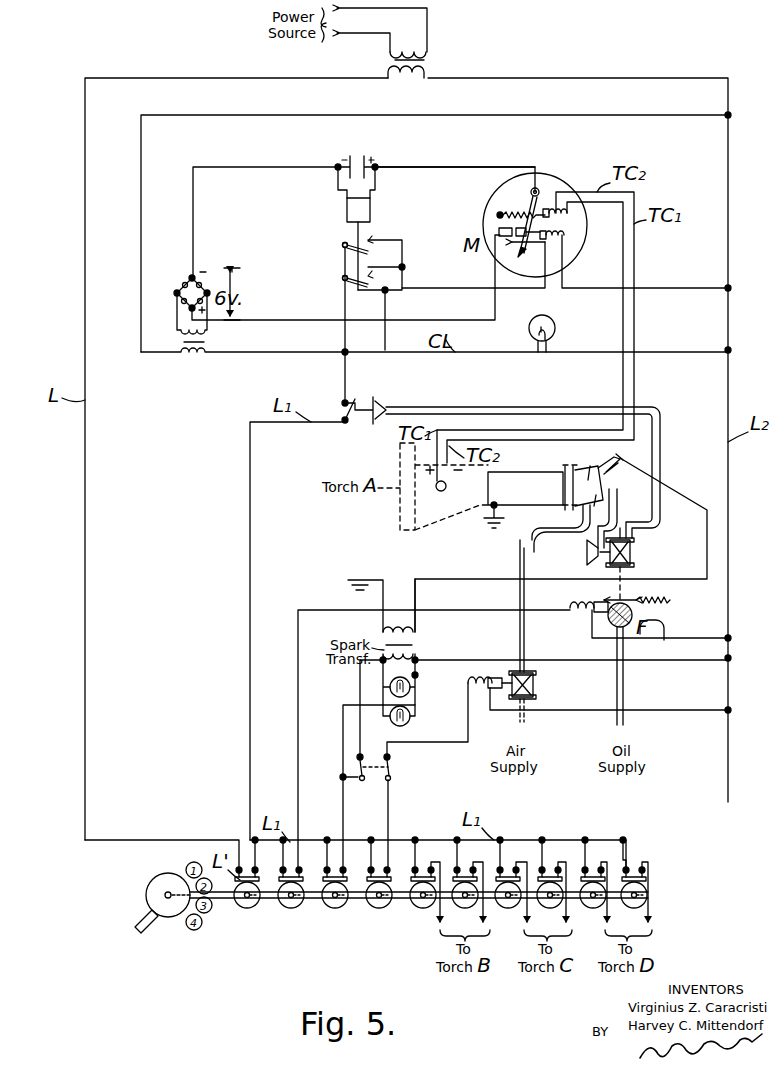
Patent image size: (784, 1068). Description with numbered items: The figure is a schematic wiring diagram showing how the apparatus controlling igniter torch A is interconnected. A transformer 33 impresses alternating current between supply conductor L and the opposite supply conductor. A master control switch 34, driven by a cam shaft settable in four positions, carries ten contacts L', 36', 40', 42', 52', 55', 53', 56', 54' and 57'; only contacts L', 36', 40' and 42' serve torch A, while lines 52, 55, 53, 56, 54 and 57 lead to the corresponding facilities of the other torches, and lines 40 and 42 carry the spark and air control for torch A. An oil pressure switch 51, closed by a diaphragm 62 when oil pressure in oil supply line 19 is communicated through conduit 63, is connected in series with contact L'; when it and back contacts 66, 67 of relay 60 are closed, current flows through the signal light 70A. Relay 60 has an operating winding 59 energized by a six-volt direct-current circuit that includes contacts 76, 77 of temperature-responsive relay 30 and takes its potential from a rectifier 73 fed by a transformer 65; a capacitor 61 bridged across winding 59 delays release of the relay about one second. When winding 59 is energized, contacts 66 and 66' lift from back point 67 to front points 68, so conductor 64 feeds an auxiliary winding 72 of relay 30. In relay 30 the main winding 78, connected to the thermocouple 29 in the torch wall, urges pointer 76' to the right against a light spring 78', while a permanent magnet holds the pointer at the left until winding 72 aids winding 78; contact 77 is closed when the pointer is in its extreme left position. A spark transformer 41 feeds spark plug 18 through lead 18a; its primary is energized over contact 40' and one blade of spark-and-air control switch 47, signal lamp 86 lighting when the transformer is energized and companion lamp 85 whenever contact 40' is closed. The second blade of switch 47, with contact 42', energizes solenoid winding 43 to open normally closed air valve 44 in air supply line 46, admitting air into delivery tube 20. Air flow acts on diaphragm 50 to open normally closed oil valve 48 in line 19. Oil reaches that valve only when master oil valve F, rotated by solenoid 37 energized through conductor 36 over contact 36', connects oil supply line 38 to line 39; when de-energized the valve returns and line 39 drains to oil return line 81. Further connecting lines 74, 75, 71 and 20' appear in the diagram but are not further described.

The transformer 33 is at (430, 58).
The capacitor 61 is at (356, 153).
The conductor 74 is at (282, 170).
The contact of temperature-responsive relay 76 is at (455, 182).
The pointer 76' is at (520, 185).
The light spring 78' is at (499, 205).
The main winding 78 is at (578, 221).
The auxiliary winding 72 is at (565, 238).
The operating winding 59 is at (345, 208).
The relay 60 is at (342, 243).
The relay contact 66 is at (338, 255).
The parallel relay contact 66' is at (335, 285).
The front points 68 is at (381, 264).
The back point 67 is at (380, 292).
The rectifier 73 is at (184, 286).
The transformer 65 is at (182, 348).
The conductor 75 is at (298, 318).
The conductor 64 is at (290, 352).
The conductor 71 is at (470, 290).
The relay contact 77 is at (514, 260).
The temperature-responsive relay 30 is at (474, 229).
The signal light 70A is at (556, 328).
The oil pressure switch 51 is at (349, 403).
The diaphragm 62 is at (384, 404).
The conduit 63 is at (521, 407).
The thermocouple 29 is at (439, 492).
The spark plug 18 is at (598, 468).
The supply lead 18a is at (684, 494).
The oil supply line 19 is at (619, 511).
The delivery tube 20 is at (562, 528).
The air line 20' is at (502, 606).
The normally closed oil valve 48 is at (632, 552).
The diaphragm 50 is at (584, 558).
The oil line 39 is at (650, 600).
The solenoid 37 is at (576, 612).
The oil return line 81 is at (664, 632).
The solenoid conductor 36 is at (416, 727).
The spark transformer 41 is at (418, 652).
The signal lamp 86 is at (411, 688).
The companion signal lamp 85 is at (411, 717).
The normally closed air valve 44 is at (534, 681).
The solenoid winding 43 is at (477, 700).
The air supply line 46 is at (526, 737).
The oil supply line 38 is at (630, 732).
The spark control line 40 is at (344, 787).
The spark-and-air control switch 47 is at (373, 784).
The air control line 42 is at (427, 776).
The master control switch 34 is at (144, 895).
The supply conductor L is at (406, 459).
The master switch contact L' is at (247, 872).
The master switch contact 36' is at (296, 872).
The master switch contact 40' is at (339, 872).
The master switch contact 42' is at (383, 872).
The master switch contact 52' is at (426, 872).
The master switch contact 55' is at (456, 872).
The master switch contact 53' is at (498, 872).
The master switch contact 56' is at (540, 872).
The master switch contact 54' is at (583, 872).
The master switch contact 57' is at (623, 872).
The line to torch B 52 is at (424, 894).
The line to torch B 55 is at (467, 894).
The line to torch C 53 is at (511, 894).
The line to torch C 56 is at (551, 894).
The line to torch D 54 is at (593, 894).
The line to torch D 57 is at (634, 894).